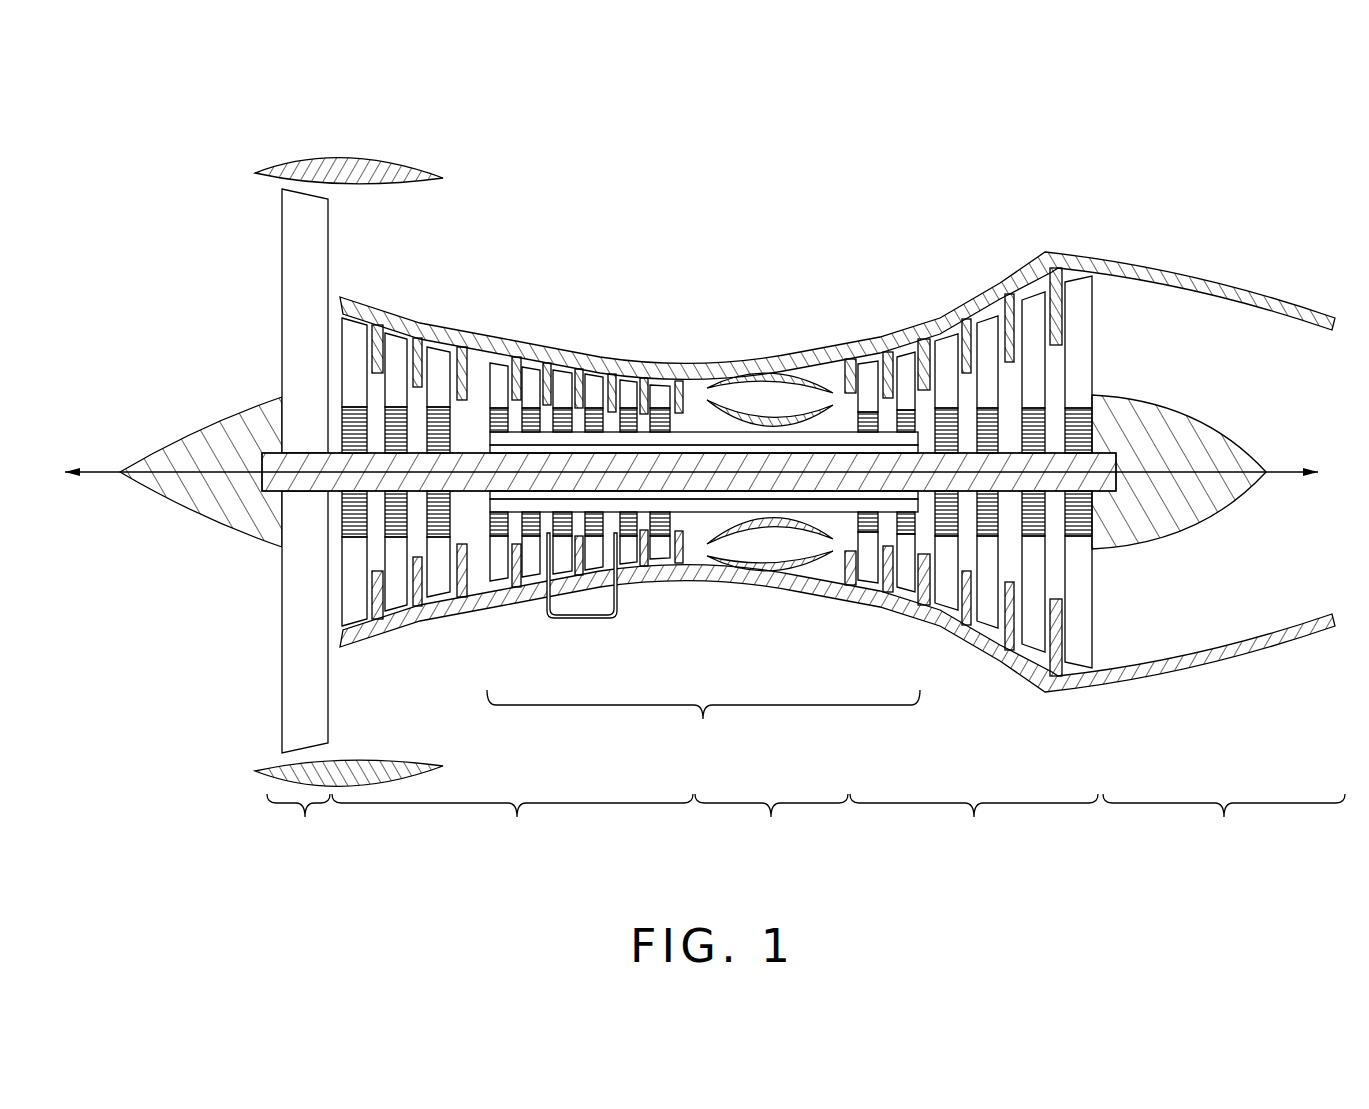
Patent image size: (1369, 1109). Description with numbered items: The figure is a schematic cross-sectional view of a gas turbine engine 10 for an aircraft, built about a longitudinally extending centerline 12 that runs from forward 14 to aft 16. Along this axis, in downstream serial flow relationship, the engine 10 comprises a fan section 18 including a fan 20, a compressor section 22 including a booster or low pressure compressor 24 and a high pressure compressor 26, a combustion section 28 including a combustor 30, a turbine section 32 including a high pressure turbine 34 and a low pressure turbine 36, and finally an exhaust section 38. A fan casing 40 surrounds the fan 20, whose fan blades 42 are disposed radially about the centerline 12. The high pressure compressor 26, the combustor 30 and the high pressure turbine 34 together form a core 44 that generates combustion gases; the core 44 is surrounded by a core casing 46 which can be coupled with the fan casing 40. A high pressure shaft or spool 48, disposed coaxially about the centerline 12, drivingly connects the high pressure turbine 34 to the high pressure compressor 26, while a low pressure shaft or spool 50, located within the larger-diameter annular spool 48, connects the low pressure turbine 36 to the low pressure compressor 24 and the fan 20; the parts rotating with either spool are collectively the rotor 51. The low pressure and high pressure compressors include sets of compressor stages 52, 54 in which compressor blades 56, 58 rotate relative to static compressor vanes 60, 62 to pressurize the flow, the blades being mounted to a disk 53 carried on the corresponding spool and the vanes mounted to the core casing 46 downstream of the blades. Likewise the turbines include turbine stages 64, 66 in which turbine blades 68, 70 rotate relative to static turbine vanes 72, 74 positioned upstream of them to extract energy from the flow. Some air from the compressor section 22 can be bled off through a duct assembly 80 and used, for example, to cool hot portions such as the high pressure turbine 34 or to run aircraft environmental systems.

The gas turbine engine 10 is at (248, 123).
The centerline 12 is at (195, 462).
The forward 14 is at (72, 454).
The aft 16 is at (1276, 472).
The fan section 18 is at (308, 820).
The fan 20 is at (277, 268).
The compressor section 22 is at (515, 819).
The low pressure compressor 24 is at (465, 625).
The high pressure compressor 26 is at (640, 585).
The combustion section 28 is at (780, 819).
The combustor 30 is at (823, 370).
The turbine section 32 is at (975, 820).
The high pressure turbine 34 is at (845, 620).
The low pressure turbine 36 is at (968, 660).
The exhaust section 38 is at (1225, 820).
The fan casing 40 is at (355, 158).
The fan blades 42 is at (298, 672).
The core 44 is at (703, 716).
The core casing 46 is at (763, 360).
The high pressure shaft 48 is at (702, 453).
The low pressure shaft 50 is at (467, 460).
The rotor 51 is at (613, 447).
The compressor stages 52 is at (406, 335).
The disk 53 is at (437, 423).
The compressor stages 54 is at (586, 318).
The compressor blades 56 is at (352, 325).
The compressor blades 58 is at (500, 373).
The static compressor vanes 60 is at (375, 340).
The static compressor vanes 62 is at (515, 372).
The turbine stages 64 is at (870, 337).
The turbine stages 66 is at (1000, 313).
The turbine blades 68 is at (908, 363).
The turbine blades 70 is at (1032, 323).
The static turbine vanes 72 is at (888, 348).
The static turbine vanes 74 is at (1008, 360).
The duct assembly 80 is at (577, 618).